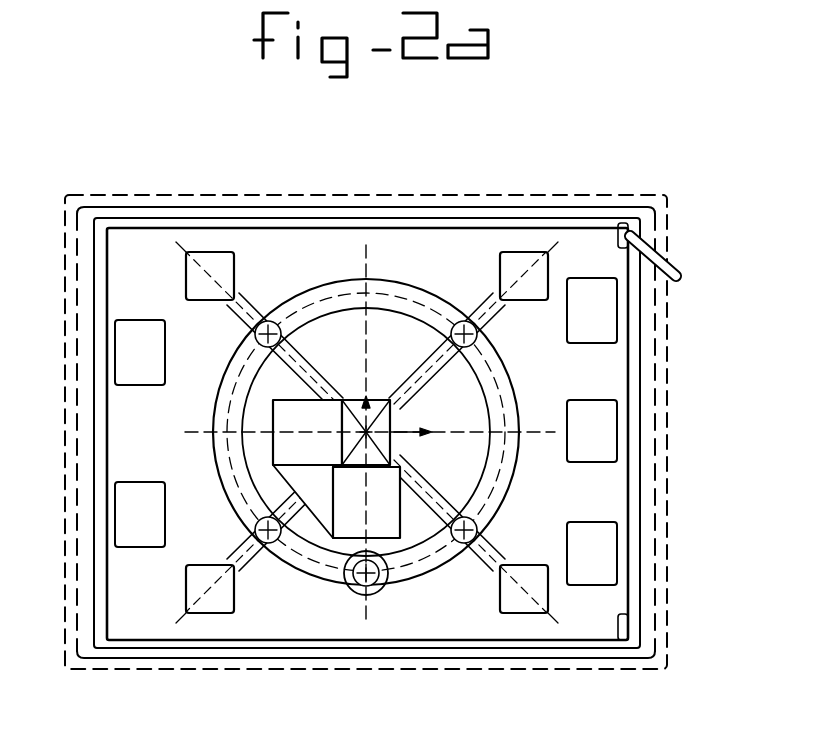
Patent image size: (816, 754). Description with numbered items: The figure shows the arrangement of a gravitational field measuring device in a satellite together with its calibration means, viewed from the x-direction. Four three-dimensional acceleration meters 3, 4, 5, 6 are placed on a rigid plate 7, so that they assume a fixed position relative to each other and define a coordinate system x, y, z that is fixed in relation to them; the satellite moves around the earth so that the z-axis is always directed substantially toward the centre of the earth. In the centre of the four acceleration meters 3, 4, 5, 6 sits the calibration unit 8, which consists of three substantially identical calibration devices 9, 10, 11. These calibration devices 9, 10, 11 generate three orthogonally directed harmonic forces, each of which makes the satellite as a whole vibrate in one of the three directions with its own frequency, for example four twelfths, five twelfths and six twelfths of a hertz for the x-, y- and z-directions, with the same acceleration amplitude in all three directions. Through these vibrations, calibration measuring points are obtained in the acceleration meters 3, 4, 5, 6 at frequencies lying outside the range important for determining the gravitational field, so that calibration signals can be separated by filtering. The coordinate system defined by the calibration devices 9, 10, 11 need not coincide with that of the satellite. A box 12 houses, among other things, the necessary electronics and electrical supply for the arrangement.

The three-dimensional acceleration meter 3 is at (518, 603).
The three-dimensional acceleration meter 4 is at (516, 258).
The three-dimensional acceleration meter 5 is at (212, 258).
The three-dimensional acceleration meter 6 is at (223, 607).
The rigid plate 7 is at (128, 592).
The calibration unit 8 is at (408, 429).
The calibration device 9 is at (403, 527).
The calibration device 10 is at (285, 417).
The calibration device 11 is at (360, 400).
The box 12 is at (608, 313).